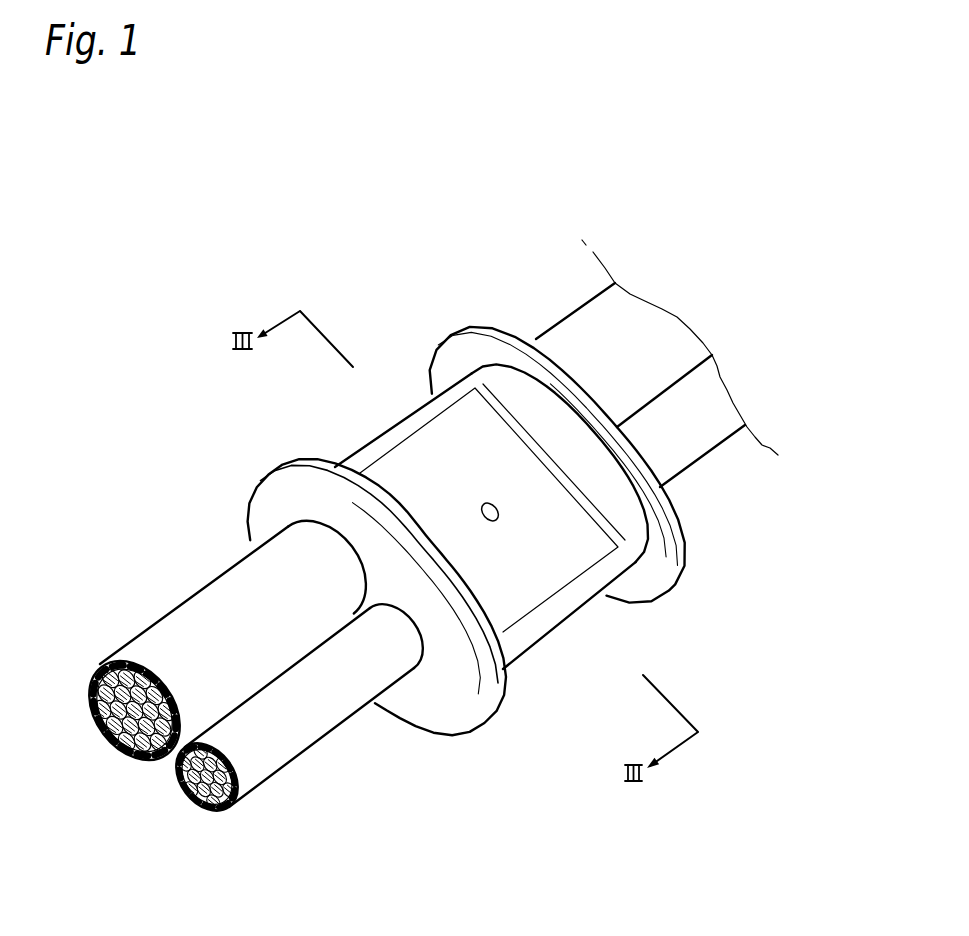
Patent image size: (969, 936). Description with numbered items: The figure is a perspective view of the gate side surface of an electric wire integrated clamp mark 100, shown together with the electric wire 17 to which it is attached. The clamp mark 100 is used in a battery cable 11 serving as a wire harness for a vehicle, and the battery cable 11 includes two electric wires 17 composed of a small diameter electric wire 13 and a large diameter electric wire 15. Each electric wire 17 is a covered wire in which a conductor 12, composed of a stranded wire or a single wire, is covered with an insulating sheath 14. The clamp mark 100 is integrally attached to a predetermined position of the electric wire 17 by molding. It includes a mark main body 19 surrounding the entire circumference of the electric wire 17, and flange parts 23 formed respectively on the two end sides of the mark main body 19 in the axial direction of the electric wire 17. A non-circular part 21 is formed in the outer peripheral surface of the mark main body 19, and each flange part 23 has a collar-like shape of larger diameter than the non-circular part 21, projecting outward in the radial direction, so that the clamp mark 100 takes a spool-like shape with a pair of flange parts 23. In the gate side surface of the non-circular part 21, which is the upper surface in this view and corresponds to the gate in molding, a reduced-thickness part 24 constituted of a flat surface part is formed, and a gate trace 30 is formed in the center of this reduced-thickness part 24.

The battery cable 11 is at (467, 141).
The electric wire integrated clamp mark 100 is at (466, 300).
The electric wire 17 is at (722, 186).
The large diameter electric wire 15 is at (633, 337).
The small diameter electric wire 13 is at (686, 403).
The gate trace 30 is at (490, 511).
The mark main body 19 is at (368, 436).
The non-circular part 21 is at (622, 503).
The flange part 23 is at (673, 570).
The reduced-thickness part 24 is at (527, 575).
The insulating sheath 14 is at (178, 615).
The conductor 12 is at (113, 730).